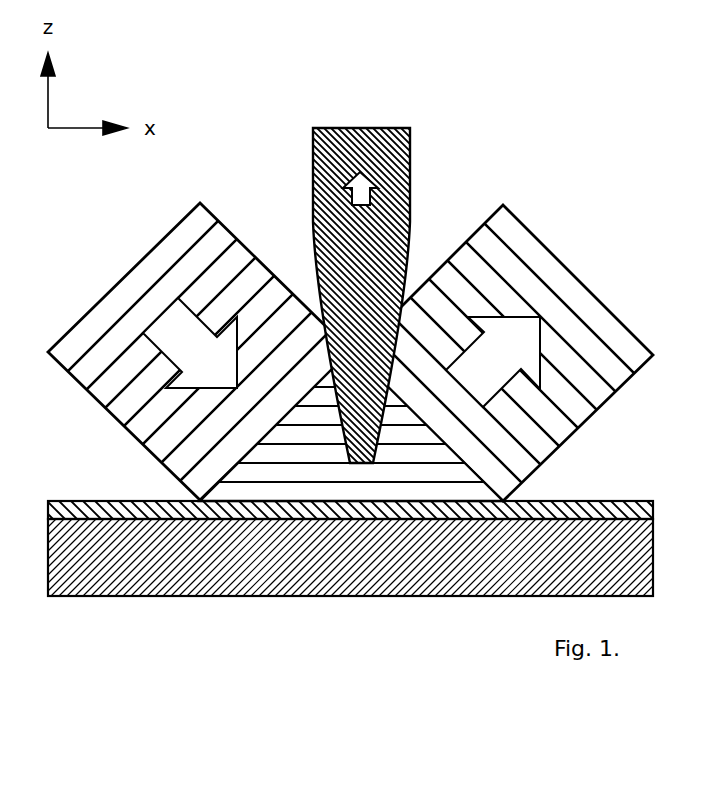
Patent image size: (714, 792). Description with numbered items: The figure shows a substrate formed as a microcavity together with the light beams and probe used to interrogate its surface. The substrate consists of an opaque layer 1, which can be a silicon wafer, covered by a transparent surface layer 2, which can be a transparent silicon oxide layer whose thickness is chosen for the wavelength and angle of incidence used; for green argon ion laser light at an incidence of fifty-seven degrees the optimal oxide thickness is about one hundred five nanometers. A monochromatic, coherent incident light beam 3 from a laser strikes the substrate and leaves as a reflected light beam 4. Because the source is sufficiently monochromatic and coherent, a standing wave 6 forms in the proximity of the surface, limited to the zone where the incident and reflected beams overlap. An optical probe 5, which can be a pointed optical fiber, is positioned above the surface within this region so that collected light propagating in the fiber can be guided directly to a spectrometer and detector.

The opaque layer 1 is at (351, 563).
The transparent surface layer 2 is at (552, 512).
The incident light beam 3 is at (137, 288).
The reflected light beam 4 is at (570, 285).
The optical probe 5 is at (355, 143).
The standing wave 6 is at (300, 475).